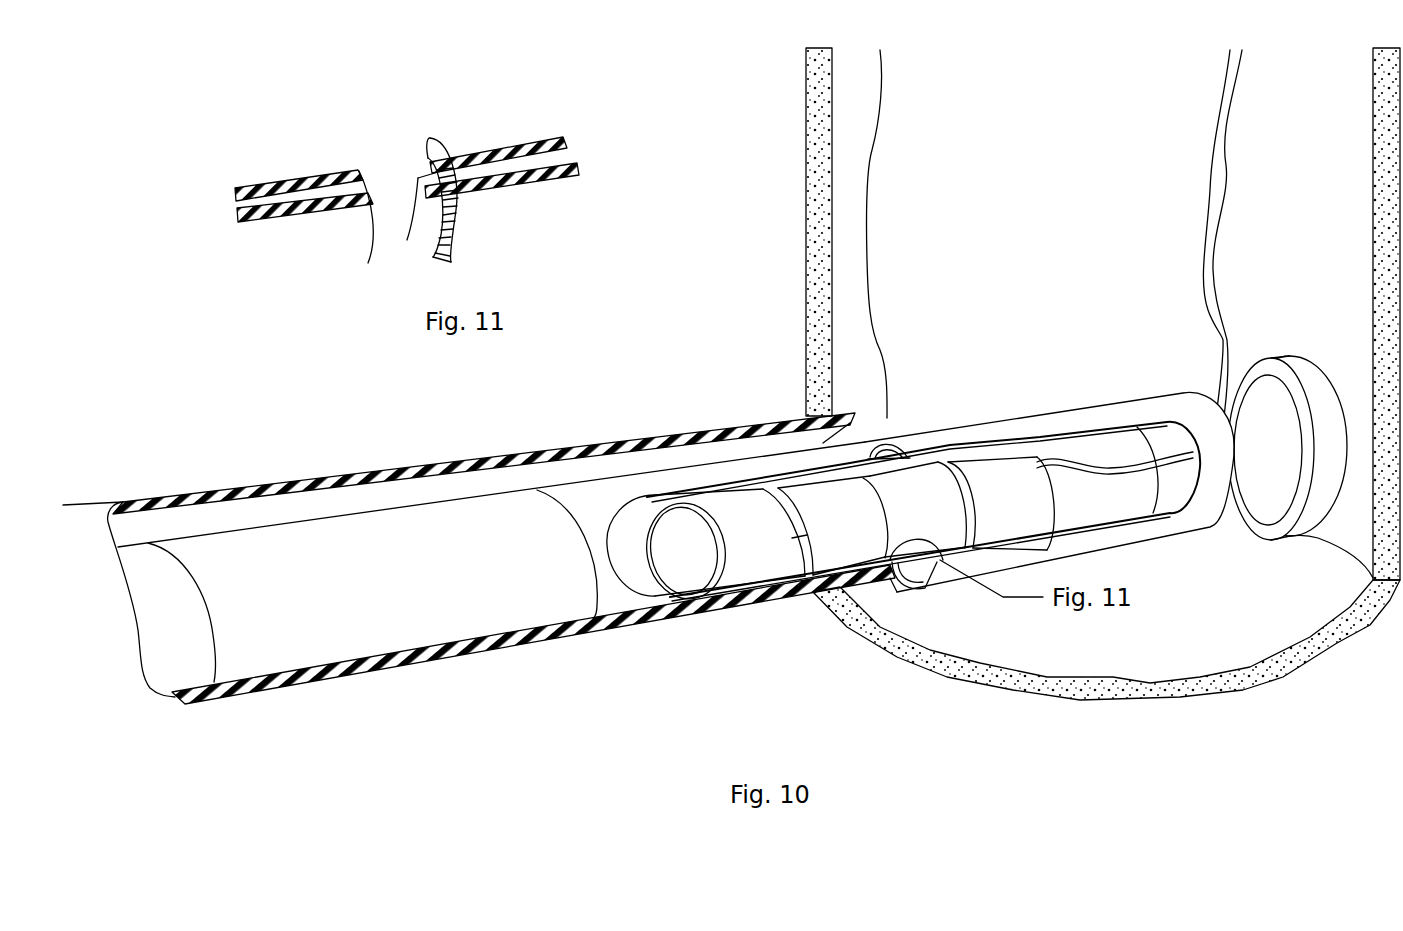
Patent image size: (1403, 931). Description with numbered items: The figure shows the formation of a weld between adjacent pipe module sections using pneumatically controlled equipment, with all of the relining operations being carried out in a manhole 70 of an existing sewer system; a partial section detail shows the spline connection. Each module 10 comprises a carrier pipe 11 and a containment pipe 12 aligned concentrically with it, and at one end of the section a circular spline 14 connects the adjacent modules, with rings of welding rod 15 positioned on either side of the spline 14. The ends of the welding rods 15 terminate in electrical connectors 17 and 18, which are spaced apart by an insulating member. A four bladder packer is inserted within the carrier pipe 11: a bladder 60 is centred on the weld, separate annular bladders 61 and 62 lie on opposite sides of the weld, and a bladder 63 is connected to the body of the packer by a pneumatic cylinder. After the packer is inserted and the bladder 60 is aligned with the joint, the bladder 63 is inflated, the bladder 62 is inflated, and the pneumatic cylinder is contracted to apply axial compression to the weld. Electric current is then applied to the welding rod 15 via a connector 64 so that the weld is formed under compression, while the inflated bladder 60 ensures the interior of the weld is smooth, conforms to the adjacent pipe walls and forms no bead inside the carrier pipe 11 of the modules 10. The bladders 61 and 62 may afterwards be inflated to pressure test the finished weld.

In FIG. 10, the module 10 is at (347, 508).
In FIG. 11, the carrier pipe 11 is at (258, 186).
In FIG. 10, the carrier pipe 11 is at (1072, 447).
In FIG. 11, the containment pipe 12 is at (283, 224).
In FIG. 10, the containment pipe 12 is at (1137, 401).
In FIG. 11, the circular spline 14 is at (415, 213).
In FIG. 11, the welding rod 15 is at (437, 183).
In FIG. 10, the electrical connector 17 is at (885, 442).
In FIG. 10, the electrical connector 18 is at (893, 438).
In FIG. 10, the bladder 60 is at (897, 519).
In FIG. 10, the bladder 61 is at (821, 539).
In FIG. 10, the bladder 62 is at (978, 507).
In FIG. 10, the bladder 63 is at (725, 546).
In FIG. 10, the connector 64 is at (883, 410).
In FIG. 10, the manhole 70 is at (1044, 232).